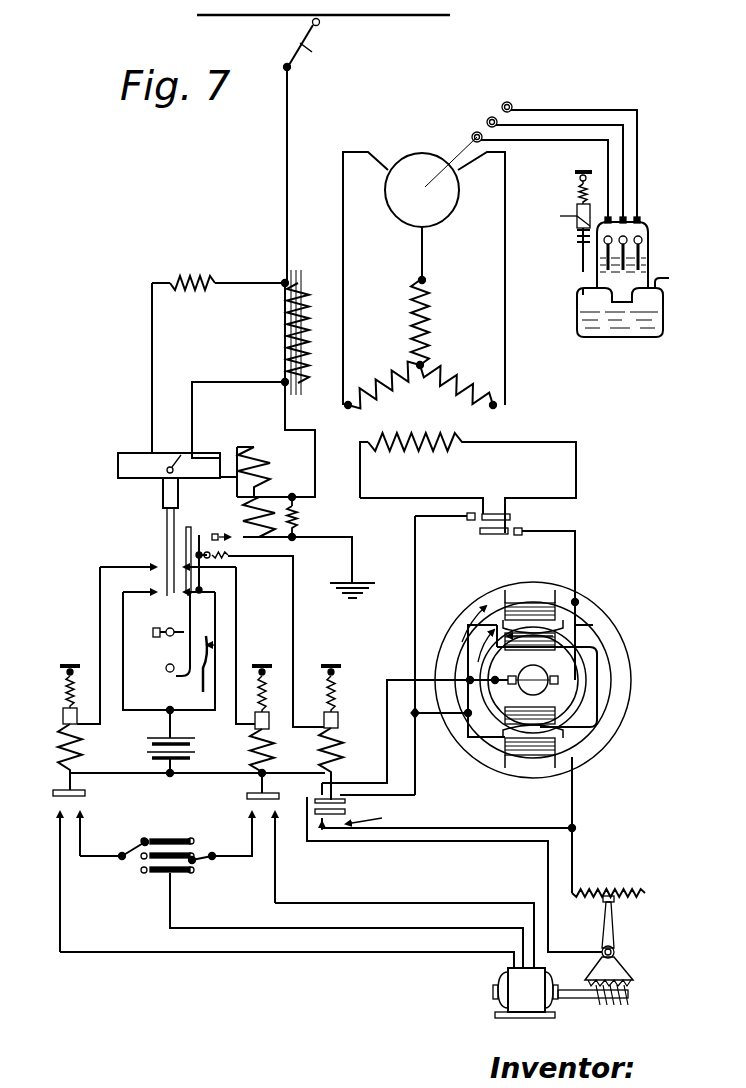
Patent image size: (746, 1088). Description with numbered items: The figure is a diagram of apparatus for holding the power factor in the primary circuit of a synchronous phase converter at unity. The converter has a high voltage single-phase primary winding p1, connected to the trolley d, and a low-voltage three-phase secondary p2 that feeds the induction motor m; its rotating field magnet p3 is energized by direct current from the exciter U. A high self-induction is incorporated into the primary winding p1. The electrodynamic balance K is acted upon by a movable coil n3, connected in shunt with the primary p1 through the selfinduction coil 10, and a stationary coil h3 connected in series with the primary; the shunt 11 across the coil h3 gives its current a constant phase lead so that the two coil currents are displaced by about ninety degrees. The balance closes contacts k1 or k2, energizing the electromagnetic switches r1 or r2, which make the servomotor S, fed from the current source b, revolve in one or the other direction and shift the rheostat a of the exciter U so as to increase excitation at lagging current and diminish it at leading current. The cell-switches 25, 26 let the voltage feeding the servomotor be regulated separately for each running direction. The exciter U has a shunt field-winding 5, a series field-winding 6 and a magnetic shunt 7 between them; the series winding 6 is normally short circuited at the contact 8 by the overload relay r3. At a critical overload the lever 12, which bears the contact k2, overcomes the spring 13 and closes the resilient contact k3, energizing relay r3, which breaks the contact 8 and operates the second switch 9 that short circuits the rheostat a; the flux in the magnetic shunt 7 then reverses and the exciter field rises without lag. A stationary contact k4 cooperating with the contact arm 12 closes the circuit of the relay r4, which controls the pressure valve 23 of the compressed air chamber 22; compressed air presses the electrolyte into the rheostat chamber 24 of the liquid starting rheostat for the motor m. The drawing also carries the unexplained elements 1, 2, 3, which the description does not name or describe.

The pawl lever 1 is at (609, 941).
The conductor 2 is at (453, 874).
The contact 3 is at (322, 797).
The shunt field-winding 5 is at (535, 612).
The series field-winding 6 is at (560, 648).
The magnetic shunt 7 is at (480, 652).
The contact 8 is at (344, 797).
The second switch 9 is at (467, 712).
The selfinduction coil 10 is at (192, 274).
The shunt 11 is at (302, 517).
The lever 12 is at (183, 640).
The spring 13 is at (203, 684).
The compressed air chamber 22 is at (578, 306).
The pressure valve 23 is at (579, 290).
The rheostat chamber 24 is at (642, 253).
The cell-switch 25 is at (128, 848).
The cell-switch 26 is at (204, 850).
The trolley d is at (307, 45).
The induction motor m is at (422, 190).
The primary winding p1 is at (283, 332).
The secondary p2 is at (421, 344).
The rotating field magnet p3 is at (468, 483).
The electrodynamic balance K is at (169, 511).
The contact k1 is at (166, 596).
The contact k2 is at (187, 596).
The contact k3 is at (212, 558).
The stationary contact k4 is at (212, 533).
The movable coil n3 is at (266, 472).
The stationary coil h3 is at (257, 517).
The electromagnetic switch r1 is at (61, 731).
The electromagnetic switch r2 is at (253, 732).
The overload relay r3 is at (338, 733).
The relay r4 is at (577, 236).
The exciter U is at (533, 680).
The rheostat a is at (608, 882).
The current source b is at (167, 846).
The servomotor S is at (560, 993).